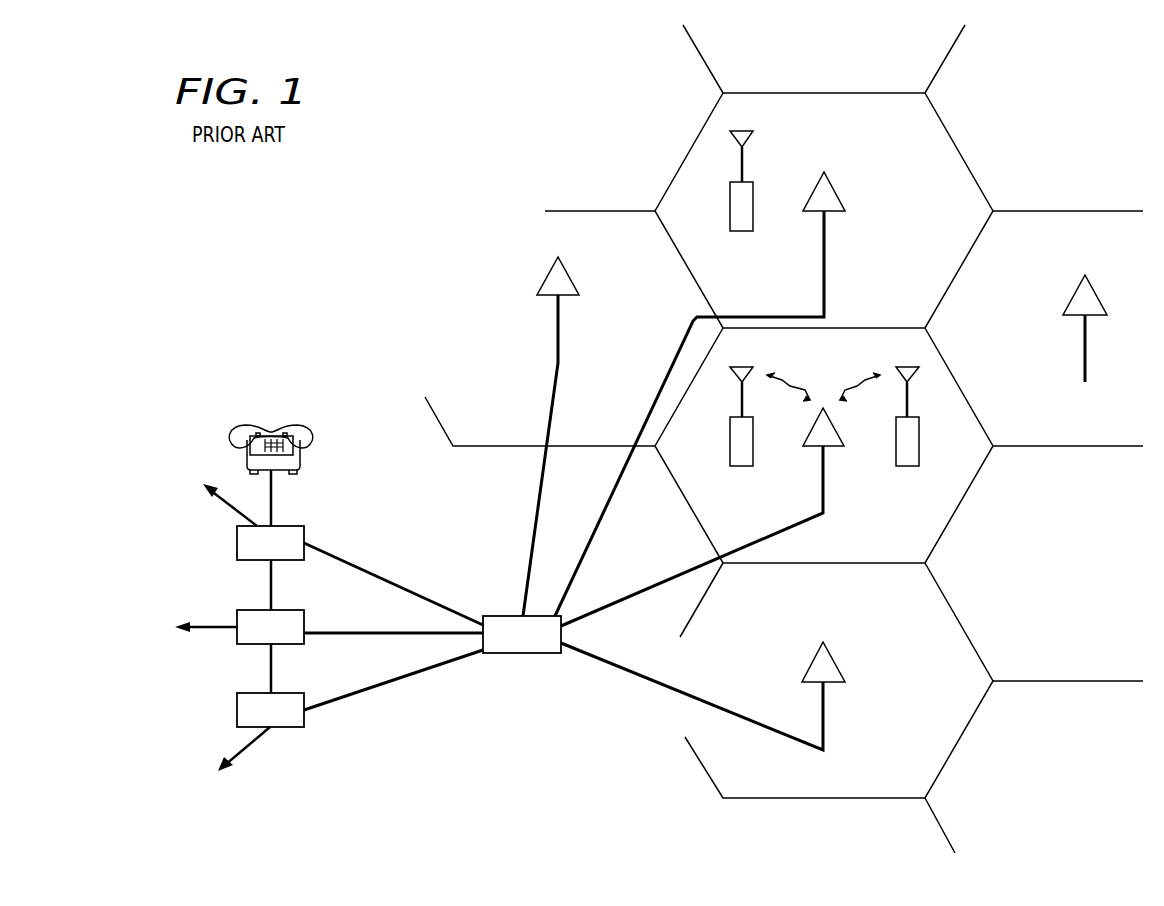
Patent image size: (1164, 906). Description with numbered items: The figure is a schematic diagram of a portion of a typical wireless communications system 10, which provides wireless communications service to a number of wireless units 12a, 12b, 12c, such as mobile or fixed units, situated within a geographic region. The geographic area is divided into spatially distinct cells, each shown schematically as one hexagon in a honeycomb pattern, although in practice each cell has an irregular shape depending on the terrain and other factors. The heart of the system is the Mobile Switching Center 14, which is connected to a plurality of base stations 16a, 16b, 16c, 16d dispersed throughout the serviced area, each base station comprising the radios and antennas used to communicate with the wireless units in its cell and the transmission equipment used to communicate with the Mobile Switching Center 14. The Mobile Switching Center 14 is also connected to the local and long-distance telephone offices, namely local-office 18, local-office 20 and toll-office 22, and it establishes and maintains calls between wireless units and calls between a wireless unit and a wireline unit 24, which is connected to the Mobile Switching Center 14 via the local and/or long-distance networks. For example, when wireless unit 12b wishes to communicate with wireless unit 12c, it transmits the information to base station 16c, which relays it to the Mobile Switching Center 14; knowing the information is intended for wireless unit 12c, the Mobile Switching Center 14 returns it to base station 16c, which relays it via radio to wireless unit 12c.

The wireless communications system 10 is at (432, 262).
The wireless unit 12a is at (740, 231).
The wireless unit 12b is at (740, 466).
The wireless unit 12c is at (905, 466).
The Mobile Switching Center 14 is at (523, 653).
The base station 16a is at (560, 333).
The base station 16b is at (826, 245).
The base station 16c is at (825, 490).
The base station 16d is at (825, 725).
The local-office 18 is at (237, 712).
The local-office 20 is at (237, 540).
The toll-office 22 is at (237, 613).
The wireline unit 24 is at (274, 423).